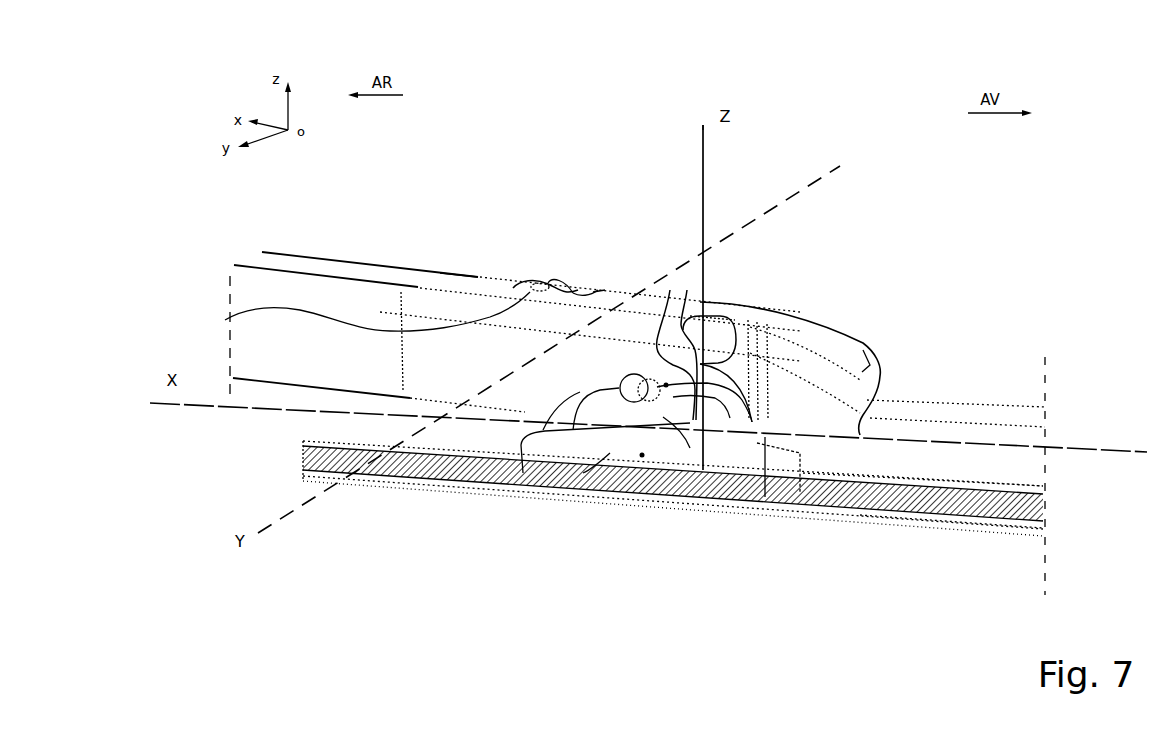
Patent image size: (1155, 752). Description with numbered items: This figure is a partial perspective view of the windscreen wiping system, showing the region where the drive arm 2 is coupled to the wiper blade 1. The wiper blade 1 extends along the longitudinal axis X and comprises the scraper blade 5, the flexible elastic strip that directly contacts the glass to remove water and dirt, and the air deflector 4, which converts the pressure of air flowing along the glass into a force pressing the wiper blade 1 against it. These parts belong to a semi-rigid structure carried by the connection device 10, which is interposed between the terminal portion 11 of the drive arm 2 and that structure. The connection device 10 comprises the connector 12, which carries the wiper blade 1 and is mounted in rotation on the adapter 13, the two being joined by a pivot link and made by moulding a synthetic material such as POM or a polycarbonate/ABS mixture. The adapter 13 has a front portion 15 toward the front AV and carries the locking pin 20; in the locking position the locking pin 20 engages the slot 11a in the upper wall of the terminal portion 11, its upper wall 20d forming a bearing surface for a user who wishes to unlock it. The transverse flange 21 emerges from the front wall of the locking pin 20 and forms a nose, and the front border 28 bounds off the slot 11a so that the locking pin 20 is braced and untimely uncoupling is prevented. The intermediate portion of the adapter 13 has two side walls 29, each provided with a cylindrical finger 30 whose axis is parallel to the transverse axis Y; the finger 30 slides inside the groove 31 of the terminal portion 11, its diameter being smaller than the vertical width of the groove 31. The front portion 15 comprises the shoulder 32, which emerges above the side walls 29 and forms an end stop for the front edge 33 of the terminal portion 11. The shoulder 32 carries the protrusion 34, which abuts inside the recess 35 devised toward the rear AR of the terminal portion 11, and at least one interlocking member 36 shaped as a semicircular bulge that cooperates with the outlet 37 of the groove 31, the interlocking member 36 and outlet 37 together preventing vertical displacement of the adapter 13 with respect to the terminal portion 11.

The wiper blade 1 is at (414, 499).
The drive arm 2 is at (385, 262).
The air deflector 4 is at (987, 400).
The scraper blade 5 is at (882, 530).
The connection device 10 is at (646, 188).
The terminal portion 11 is at (483, 277).
The slot 11a is at (526, 280).
The connector 12 is at (641, 458).
The adapter 13 is at (803, 300).
The front portion 15 is at (859, 356).
The locking pin 20 is at (236, 321).
The upper wall 20d is at (552, 281).
The transverse flange 21 is at (593, 290).
The front border 28 is at (597, 292).
The side walls 29 is at (752, 425).
The finger 30 is at (497, 494).
The groove 31 is at (684, 430).
The shoulder 32 is at (736, 315).
The front edge 33 is at (670, 292).
The protrusion 34 is at (703, 313).
The recess 35 is at (687, 292).
The interlocking member 36 is at (712, 422).
The outlet 37 is at (664, 388).